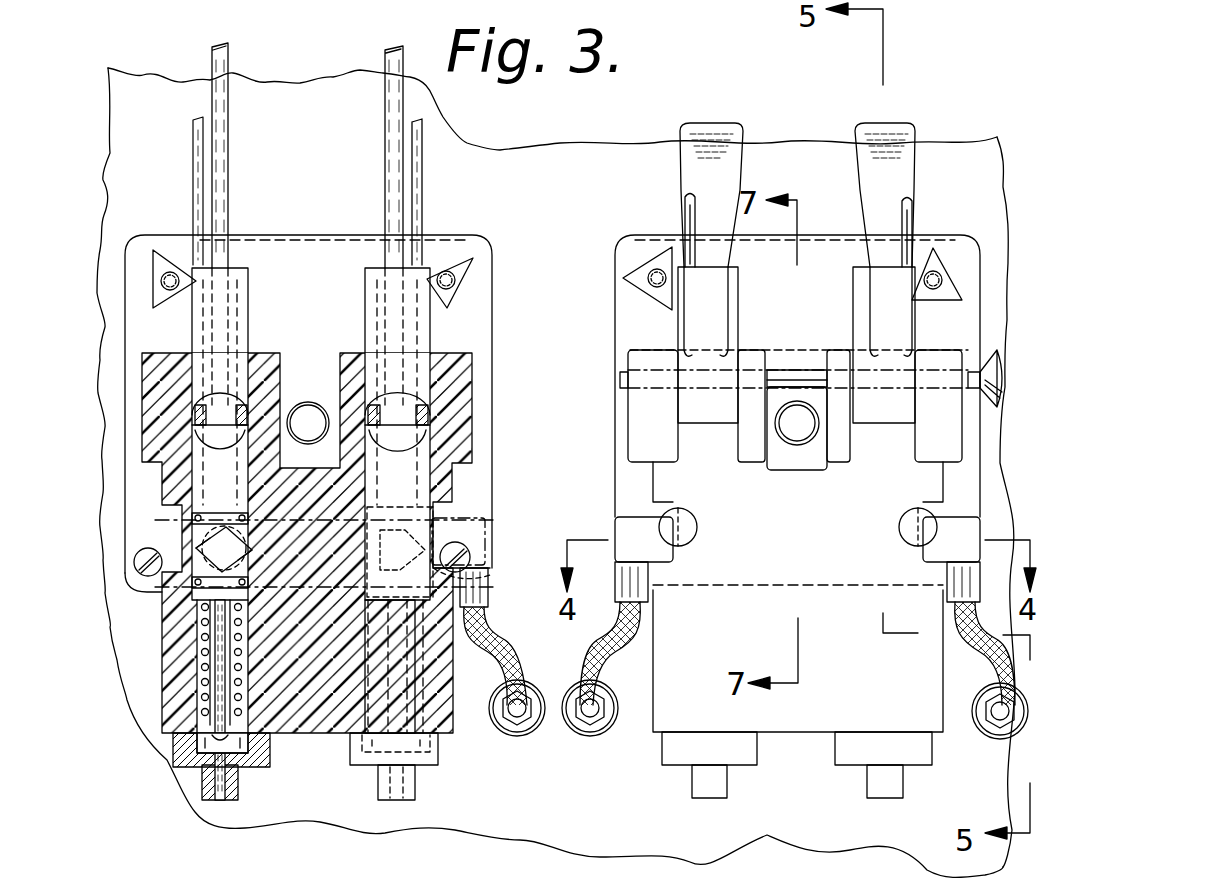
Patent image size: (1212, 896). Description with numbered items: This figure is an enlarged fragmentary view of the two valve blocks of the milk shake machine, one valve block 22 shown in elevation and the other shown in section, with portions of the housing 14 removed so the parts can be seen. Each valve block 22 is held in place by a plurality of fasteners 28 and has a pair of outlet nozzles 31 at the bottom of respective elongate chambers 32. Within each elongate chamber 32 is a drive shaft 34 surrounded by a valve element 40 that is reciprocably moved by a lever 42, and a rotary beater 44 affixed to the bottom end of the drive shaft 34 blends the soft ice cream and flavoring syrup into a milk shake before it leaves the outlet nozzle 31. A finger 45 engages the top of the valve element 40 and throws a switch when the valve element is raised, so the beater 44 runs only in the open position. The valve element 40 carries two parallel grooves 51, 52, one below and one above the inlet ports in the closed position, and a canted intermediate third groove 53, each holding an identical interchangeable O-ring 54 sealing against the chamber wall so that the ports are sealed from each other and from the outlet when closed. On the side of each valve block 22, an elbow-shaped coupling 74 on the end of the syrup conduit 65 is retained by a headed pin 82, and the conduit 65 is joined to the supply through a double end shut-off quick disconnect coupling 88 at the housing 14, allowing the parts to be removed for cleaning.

The housing 14 is at (568, 158).
The valve block 22 is at (496, 230).
The fasteners 28 is at (473, 292).
The outlet nozzles 31 is at (238, 797).
The elongate chamber 32 is at (196, 471).
The drive shaft 34 is at (220, 142).
The valve element 40 is at (243, 292).
The lever 42 is at (730, 133).
The rotary beater 44 is at (207, 738).
The finger 45 is at (198, 169).
The groove 51 is at (222, 580).
The groove 52 is at (200, 517).
The third groove 53 is at (253, 523).
The O-ring 54 is at (247, 507).
The conduit 65 is at (503, 640).
The coupling 74 is at (490, 550).
The headed pin 82 is at (698, 532).
The quick disconnect coupling 88 is at (520, 736).